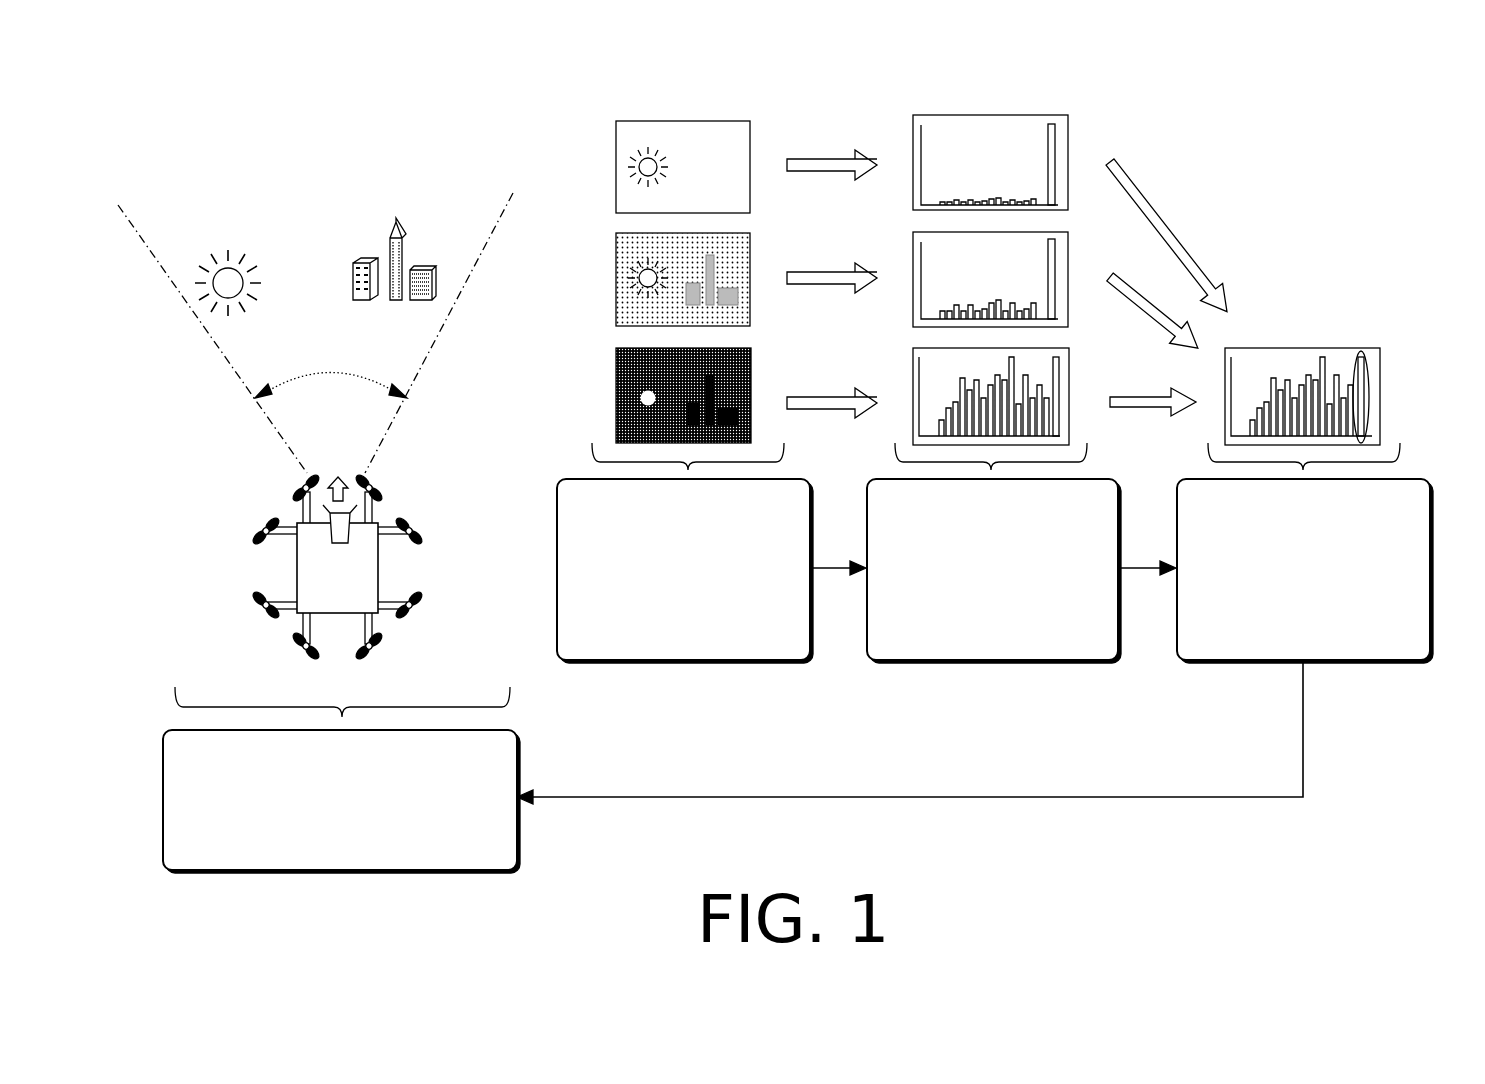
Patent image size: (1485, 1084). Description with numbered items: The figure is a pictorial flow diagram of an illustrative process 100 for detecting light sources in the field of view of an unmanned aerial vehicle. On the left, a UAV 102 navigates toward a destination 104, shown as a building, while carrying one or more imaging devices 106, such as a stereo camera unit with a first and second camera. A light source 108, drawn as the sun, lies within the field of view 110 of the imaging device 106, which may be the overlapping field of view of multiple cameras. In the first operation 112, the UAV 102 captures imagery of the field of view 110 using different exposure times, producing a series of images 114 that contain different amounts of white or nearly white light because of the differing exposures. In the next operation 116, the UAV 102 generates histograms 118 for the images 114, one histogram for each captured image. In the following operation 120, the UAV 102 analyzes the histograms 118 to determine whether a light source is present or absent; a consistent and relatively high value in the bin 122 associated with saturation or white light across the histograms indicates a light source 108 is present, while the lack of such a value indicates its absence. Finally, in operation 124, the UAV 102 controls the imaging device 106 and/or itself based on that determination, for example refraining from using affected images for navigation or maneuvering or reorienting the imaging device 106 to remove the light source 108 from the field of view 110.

The process 100 is at (174, 110).
The UAV 102 is at (297, 568).
The destination 104 is at (350, 262).
The imaging device 106 is at (335, 520).
The light source 108 is at (222, 260).
The field of view 110 is at (392, 374).
The operation of capturing imagery 112 is at (685, 571).
The images 114 is at (612, 96).
The operation of generating histograms 116 is at (994, 571).
The histograms 118 is at (908, 96).
The operation of analyzing histograms 120 is at (1325, 474).
The bin 122 is at (1368, 373).
The operation of controlling imaging device and/or UAV 124 is at (341, 780).